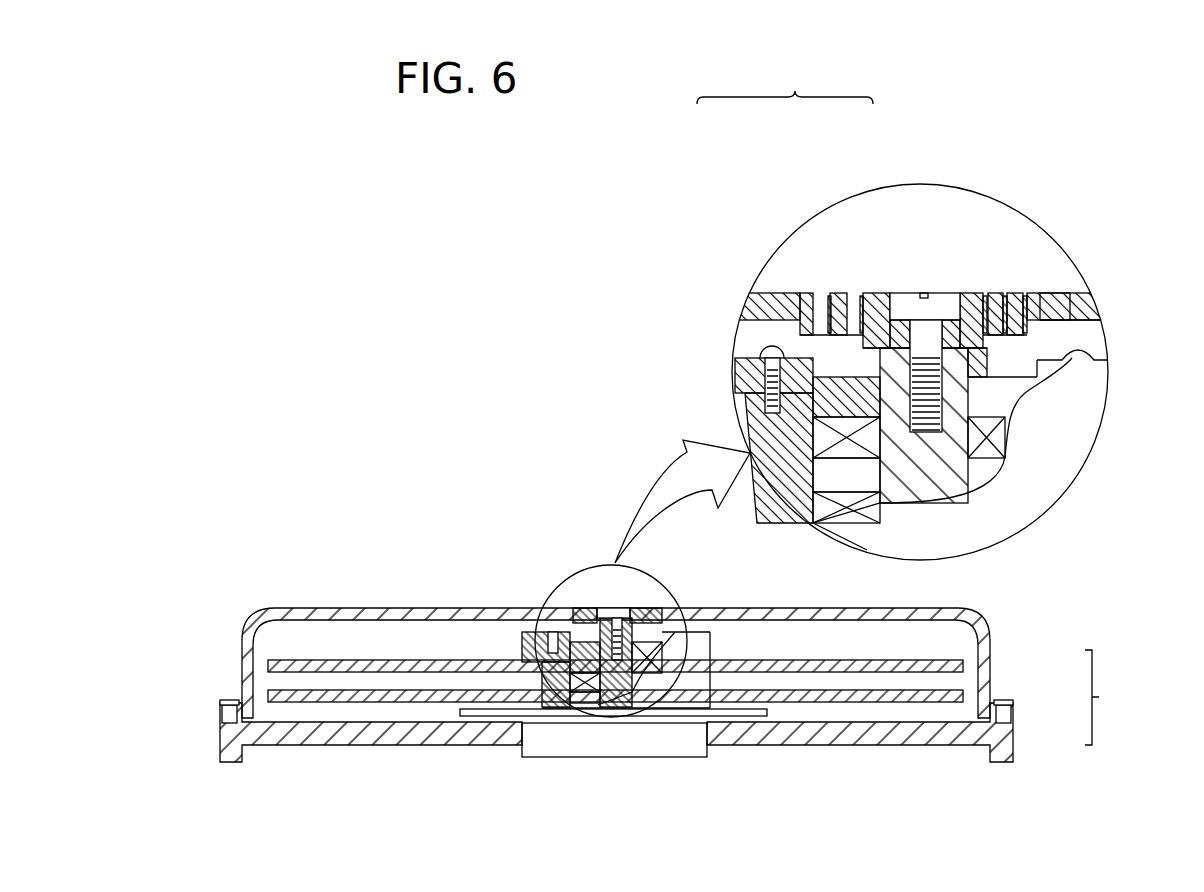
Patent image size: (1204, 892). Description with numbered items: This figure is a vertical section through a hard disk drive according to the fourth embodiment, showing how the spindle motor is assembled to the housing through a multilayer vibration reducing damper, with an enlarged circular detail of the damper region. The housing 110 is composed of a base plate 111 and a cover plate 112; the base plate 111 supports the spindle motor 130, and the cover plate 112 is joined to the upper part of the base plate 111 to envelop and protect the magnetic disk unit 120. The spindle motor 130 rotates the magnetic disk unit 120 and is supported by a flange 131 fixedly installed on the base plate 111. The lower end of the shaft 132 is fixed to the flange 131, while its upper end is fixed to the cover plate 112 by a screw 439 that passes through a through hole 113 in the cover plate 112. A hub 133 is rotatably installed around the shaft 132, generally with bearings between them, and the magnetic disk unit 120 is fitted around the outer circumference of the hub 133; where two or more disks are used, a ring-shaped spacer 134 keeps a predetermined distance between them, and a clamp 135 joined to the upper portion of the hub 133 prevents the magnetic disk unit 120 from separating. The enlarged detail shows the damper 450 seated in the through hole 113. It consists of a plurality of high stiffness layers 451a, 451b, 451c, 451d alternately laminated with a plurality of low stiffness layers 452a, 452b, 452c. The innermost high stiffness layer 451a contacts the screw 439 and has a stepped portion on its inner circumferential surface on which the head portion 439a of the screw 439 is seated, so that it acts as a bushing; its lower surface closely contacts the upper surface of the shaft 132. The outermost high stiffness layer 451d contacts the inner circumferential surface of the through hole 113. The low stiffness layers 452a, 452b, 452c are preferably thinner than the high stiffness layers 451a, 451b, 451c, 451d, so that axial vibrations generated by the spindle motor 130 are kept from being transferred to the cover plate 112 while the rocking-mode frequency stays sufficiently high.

The housing 110 is at (1111, 697).
The base plate 111 is at (1012, 745).
The cover plate 112 is at (1100, 301).
The through hole 113 is at (1052, 293).
The magnetic disk unit 120 is at (347, 667).
The spindle motor 130 is at (652, 766).
The flange 131 is at (487, 714).
The shaft 132 is at (1000, 496).
The hub 133 is at (792, 488).
The spacer 134 is at (530, 655).
The clamp 135 is at (740, 372).
The screw 439 is at (924, 285).
The head portion 439a is at (958, 293).
The damper 450 is at (862, 207).
The high stiffness layer 451a is at (878, 293).
The high stiffness layer 451b is at (830, 293).
The high stiffness layer 451c is at (805, 293).
The high stiffness layer 451d is at (752, 293).
The low stiffness layer 452a is at (848, 293).
The low stiffness layer 452b is at (818, 293).
The low stiffness layer 452c is at (778, 293).